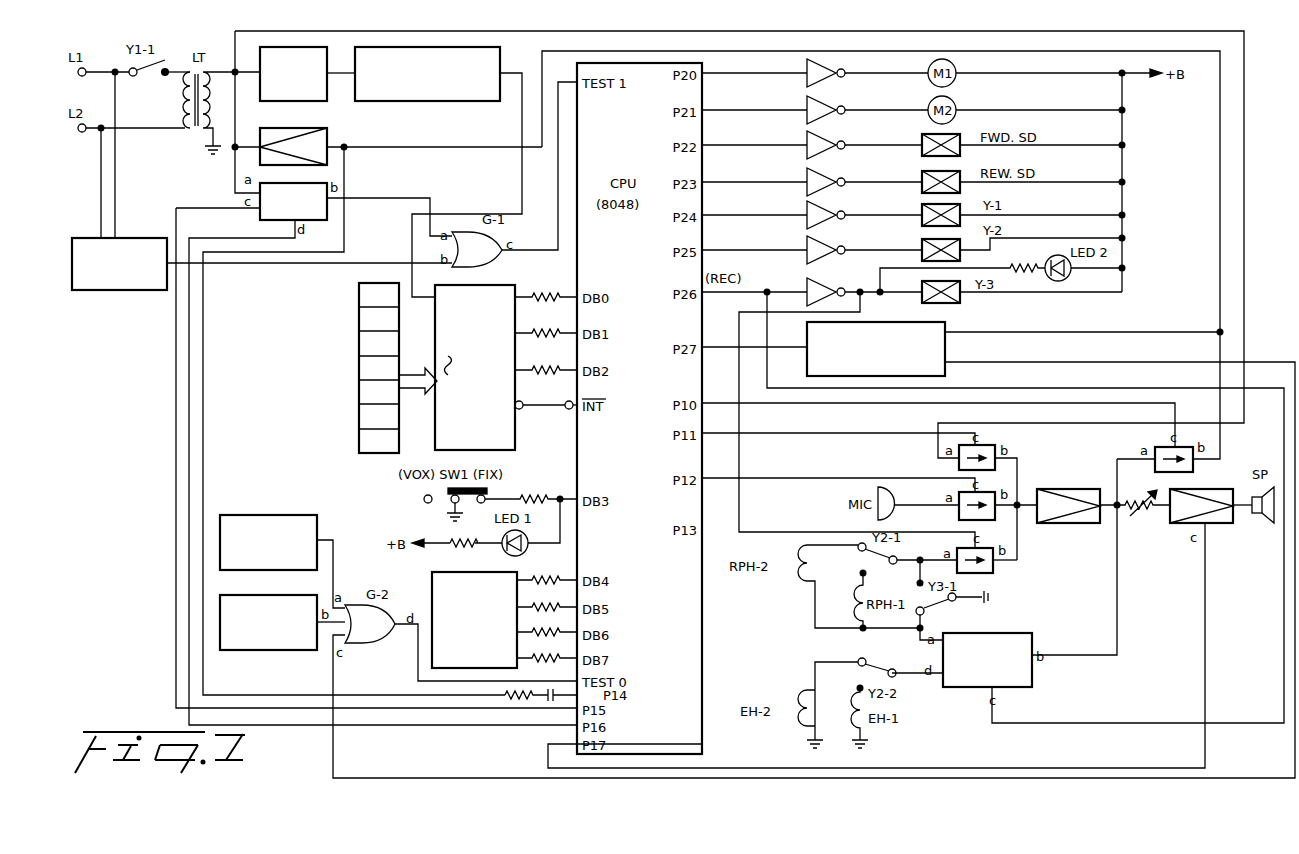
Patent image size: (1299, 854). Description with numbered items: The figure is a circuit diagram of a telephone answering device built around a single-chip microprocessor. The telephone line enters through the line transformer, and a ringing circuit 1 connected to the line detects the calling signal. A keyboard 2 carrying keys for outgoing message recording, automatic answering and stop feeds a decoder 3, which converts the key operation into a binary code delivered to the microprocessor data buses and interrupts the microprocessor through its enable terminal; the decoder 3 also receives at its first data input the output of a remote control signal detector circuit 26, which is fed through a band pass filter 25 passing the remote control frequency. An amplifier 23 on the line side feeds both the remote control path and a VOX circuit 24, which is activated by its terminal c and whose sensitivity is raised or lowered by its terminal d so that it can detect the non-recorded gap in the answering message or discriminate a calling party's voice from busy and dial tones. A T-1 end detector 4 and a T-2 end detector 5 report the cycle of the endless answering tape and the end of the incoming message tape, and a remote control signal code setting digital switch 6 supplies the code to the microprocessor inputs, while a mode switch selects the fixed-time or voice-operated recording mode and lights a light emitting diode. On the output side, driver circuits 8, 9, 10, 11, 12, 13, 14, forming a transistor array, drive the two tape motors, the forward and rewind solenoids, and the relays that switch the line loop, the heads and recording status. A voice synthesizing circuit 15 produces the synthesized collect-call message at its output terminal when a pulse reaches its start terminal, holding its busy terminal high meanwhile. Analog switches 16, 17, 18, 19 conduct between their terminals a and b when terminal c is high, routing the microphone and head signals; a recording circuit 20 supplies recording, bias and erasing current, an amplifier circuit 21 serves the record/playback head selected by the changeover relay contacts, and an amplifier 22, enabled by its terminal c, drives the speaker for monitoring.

The ringing circuit 1 is at (128, 240).
The keyboard 2 is at (385, 283).
The decoder 3 is at (488, 290).
The T-1 end detector 4 is at (256, 515).
The T-2 end detector 5 is at (276, 645).
The remote control signal code setting digital switch 6 is at (445, 582).
The driver circuit 8 is at (828, 71).
The driver circuit 9 is at (828, 108).
The driver circuit 10 is at (828, 143).
The driver circuit 11 is at (828, 180).
The driver circuit 12 is at (828, 213).
The driver circuit 13 is at (828, 248).
The driver circuit 14 is at (828, 290).
The voice synthesizing circuit 15 is at (948, 328).
The analog switch 16 is at (988, 450).
The analog switch 17 is at (968, 507).
The analog switch 18 is at (992, 566).
The analog switch 19 is at (1190, 464).
The recording circuit 20 is at (1018, 634).
The amplifier circuit 21 is at (1075, 490).
The amplifier 22 is at (1220, 520).
The amplifier 23 is at (275, 138).
The VOX circuit 24 is at (272, 212).
The band pass filter 25 is at (316, 70).
The remote control signal detector circuit 26 is at (475, 90).